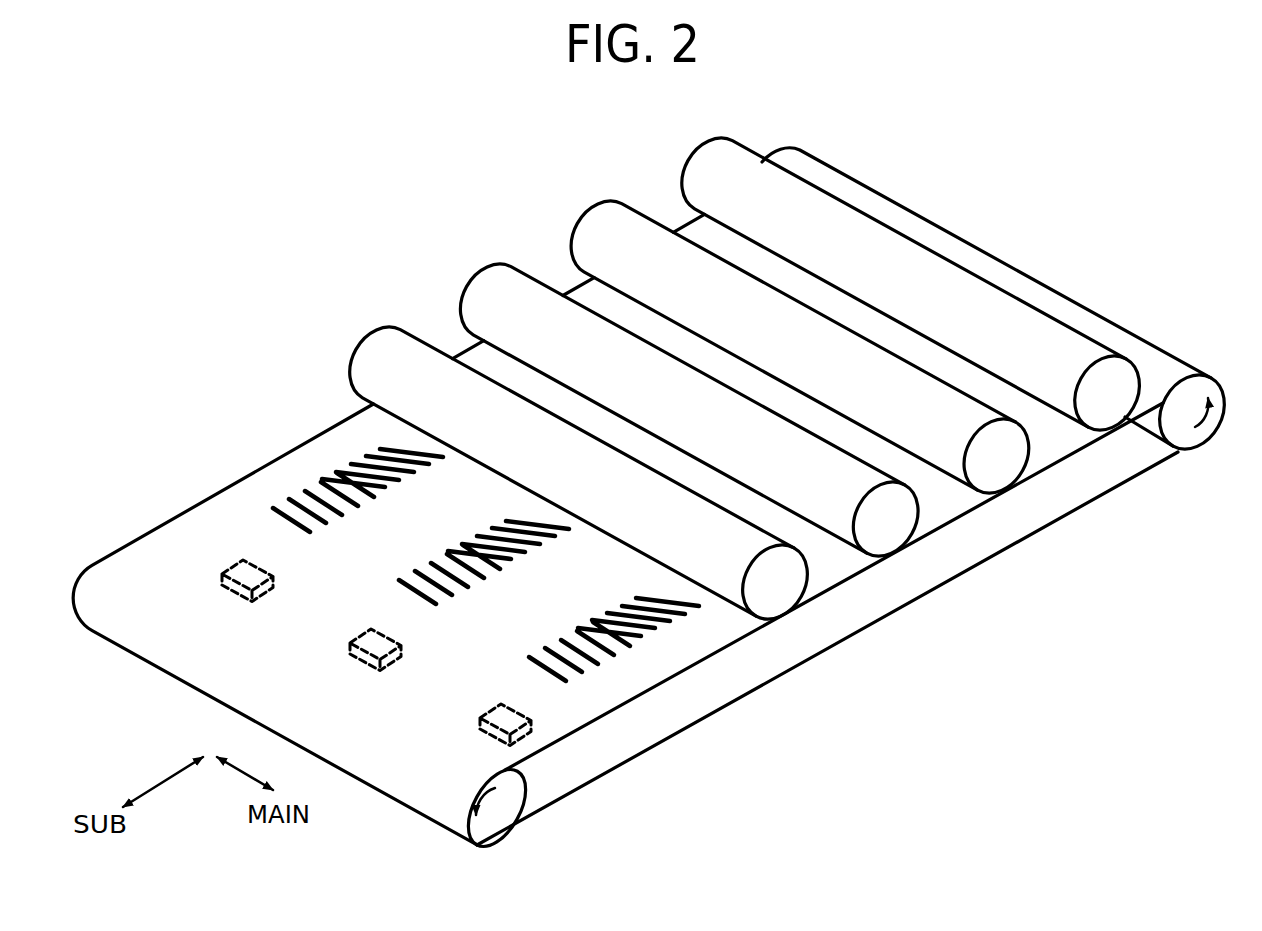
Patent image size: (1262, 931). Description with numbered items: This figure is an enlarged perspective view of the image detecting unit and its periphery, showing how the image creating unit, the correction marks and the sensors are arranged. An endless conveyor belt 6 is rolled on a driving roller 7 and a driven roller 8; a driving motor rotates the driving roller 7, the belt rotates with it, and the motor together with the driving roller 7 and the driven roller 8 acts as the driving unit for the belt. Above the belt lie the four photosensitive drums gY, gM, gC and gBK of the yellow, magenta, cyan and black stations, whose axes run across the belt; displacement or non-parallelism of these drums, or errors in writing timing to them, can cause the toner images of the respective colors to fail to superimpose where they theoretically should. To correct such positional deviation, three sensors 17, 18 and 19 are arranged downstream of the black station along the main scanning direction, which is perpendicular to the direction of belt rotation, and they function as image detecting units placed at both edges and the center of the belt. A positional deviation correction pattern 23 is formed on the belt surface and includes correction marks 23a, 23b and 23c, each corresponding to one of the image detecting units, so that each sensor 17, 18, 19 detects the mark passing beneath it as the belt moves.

The intermediate transfer belt 6 is at (652, 724).
The driving roller 7 is at (481, 848).
The driven roller 8 is at (1190, 438).
The sensor 17 is at (490, 737).
The sensor 18 is at (364, 673).
The sensor 19 is at (236, 604).
The positional deviation correction pattern 23 is at (167, 380).
The correction mark 23a is at (671, 623).
The correction mark 23b is at (417, 563).
The correction mark 23c is at (287, 490).
The photoreceptor drum (black) gBK is at (394, 328).
The photoreceptor drum (cyan) gC is at (512, 266).
The photoreceptor drum (magenta) gM is at (623, 203).
The photoreceptor drum (yellow) gY is at (744, 141).